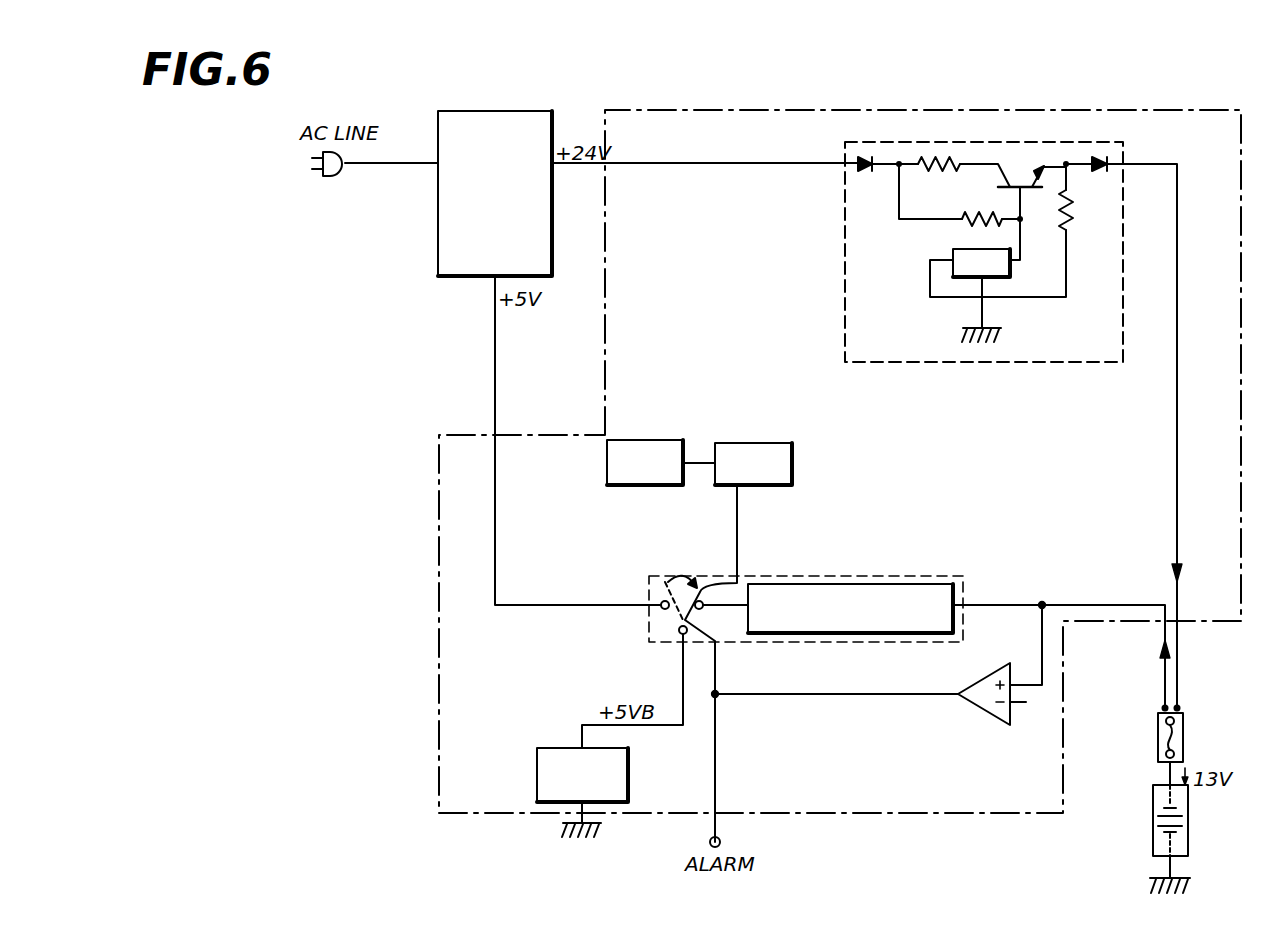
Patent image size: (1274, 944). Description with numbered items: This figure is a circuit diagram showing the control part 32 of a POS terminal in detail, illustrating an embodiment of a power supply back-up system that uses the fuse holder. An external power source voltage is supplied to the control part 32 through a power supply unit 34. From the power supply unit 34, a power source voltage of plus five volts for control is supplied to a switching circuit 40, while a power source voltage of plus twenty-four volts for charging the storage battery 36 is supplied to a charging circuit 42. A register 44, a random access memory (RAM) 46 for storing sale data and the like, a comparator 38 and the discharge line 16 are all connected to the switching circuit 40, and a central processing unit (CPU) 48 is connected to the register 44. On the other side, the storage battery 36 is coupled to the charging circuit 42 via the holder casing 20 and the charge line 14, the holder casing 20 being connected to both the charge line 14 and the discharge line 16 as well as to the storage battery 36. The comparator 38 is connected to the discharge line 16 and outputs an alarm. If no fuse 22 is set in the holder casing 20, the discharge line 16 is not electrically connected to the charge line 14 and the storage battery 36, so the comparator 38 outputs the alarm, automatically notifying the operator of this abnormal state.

The control part 32 is at (977, 110).
The power supply unit 34 is at (498, 111).
The charging circuit 42 is at (1000, 368).
The charge line 14 is at (1182, 261).
The central processing unit (CPU) 48 is at (607, 476).
The register 44 is at (793, 484).
The switching circuit 40 is at (655, 573).
The discharge line 16 is at (1000, 600).
The comparator 38 is at (966, 702).
The random access memory (RAM) 46 is at (628, 786).
The holder casing 20 is at (1176, 745).
The fuse 22 is at (1160, 736).
The storage battery 36 is at (1153, 816).